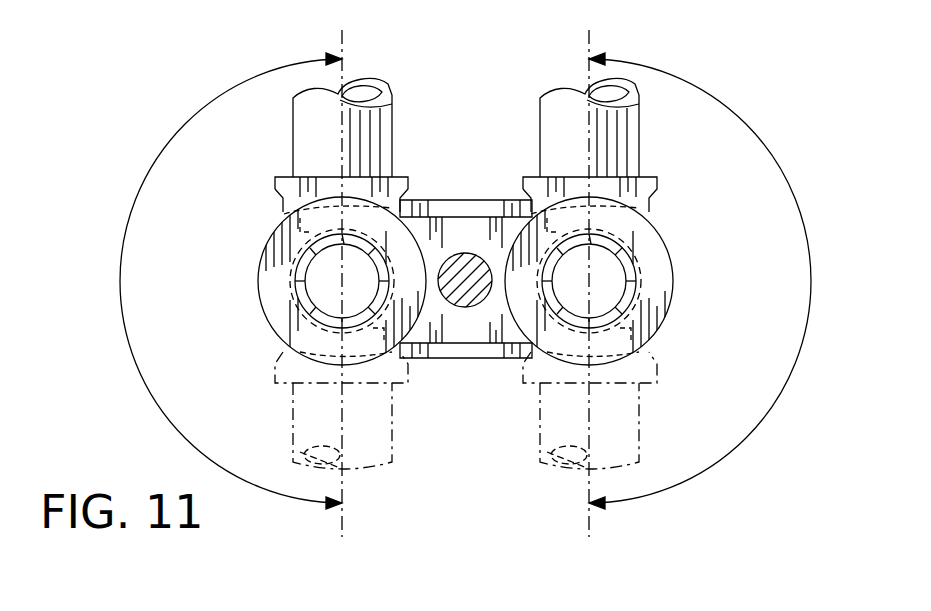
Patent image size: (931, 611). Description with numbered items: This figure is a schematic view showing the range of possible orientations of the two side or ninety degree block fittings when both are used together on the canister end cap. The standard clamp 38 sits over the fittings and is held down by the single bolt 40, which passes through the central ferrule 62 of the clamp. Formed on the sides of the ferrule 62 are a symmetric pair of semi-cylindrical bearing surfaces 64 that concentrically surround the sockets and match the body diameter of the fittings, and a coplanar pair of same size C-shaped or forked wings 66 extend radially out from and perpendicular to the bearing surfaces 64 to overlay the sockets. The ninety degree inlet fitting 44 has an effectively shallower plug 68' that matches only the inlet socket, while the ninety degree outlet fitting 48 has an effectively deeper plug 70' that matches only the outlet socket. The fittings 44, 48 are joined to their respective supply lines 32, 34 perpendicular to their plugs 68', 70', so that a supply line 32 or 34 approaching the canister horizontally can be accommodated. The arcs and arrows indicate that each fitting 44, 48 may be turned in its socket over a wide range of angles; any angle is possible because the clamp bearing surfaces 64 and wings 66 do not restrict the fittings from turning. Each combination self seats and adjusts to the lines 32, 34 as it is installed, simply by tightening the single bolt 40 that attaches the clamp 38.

The supply line 32 is at (298, 143).
The supply line 34 is at (613, 153).
The clamp 38 is at (481, 202).
The bolt 40 is at (468, 288).
The side or ninety degree inlet fitting 44 is at (283, 190).
The side or ninety degree outlet fitting 48 is at (640, 188).
The central ferrule 62 is at (437, 242).
The semi-cylindrical bearing surfaces 64 is at (268, 323).
The wings 66 is at (283, 215).
The plug 68' is at (277, 281).
The plug 70' is at (653, 281).